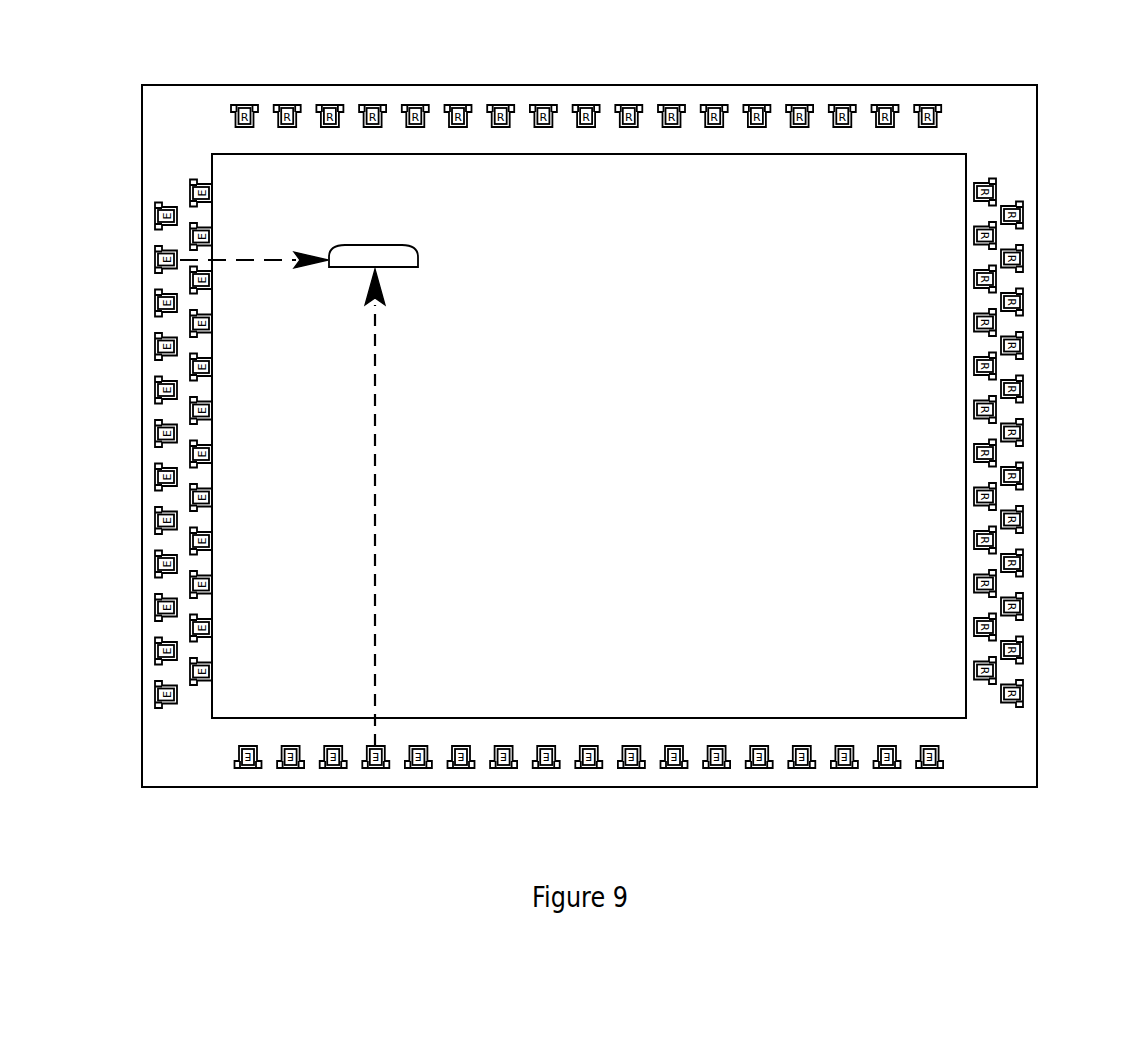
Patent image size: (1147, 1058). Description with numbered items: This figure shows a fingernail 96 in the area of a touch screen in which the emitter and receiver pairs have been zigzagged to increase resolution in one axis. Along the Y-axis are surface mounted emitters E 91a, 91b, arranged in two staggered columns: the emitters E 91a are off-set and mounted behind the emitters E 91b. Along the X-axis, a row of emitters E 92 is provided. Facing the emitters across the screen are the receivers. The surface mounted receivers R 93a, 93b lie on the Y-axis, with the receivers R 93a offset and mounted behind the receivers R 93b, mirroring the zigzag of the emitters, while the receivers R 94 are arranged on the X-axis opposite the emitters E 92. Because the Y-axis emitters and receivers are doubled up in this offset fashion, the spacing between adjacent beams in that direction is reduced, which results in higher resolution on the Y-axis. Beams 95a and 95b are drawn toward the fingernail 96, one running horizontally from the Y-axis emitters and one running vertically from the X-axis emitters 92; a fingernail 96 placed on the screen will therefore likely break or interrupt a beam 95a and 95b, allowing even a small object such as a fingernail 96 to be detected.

The surface mounted emitters E 91a is at (158, 294).
The surface mounted emitters E 91b is at (187, 495).
The emitters E 92 is at (263, 770).
The surface mounted receivers R 93a is at (1022, 385).
The surface mounted receivers R 93b is at (997, 580).
The receivers R 94 is at (756, 104).
The beam 95a is at (265, 258).
The beam 95b is at (373, 690).
The touch object 96 is at (400, 268).